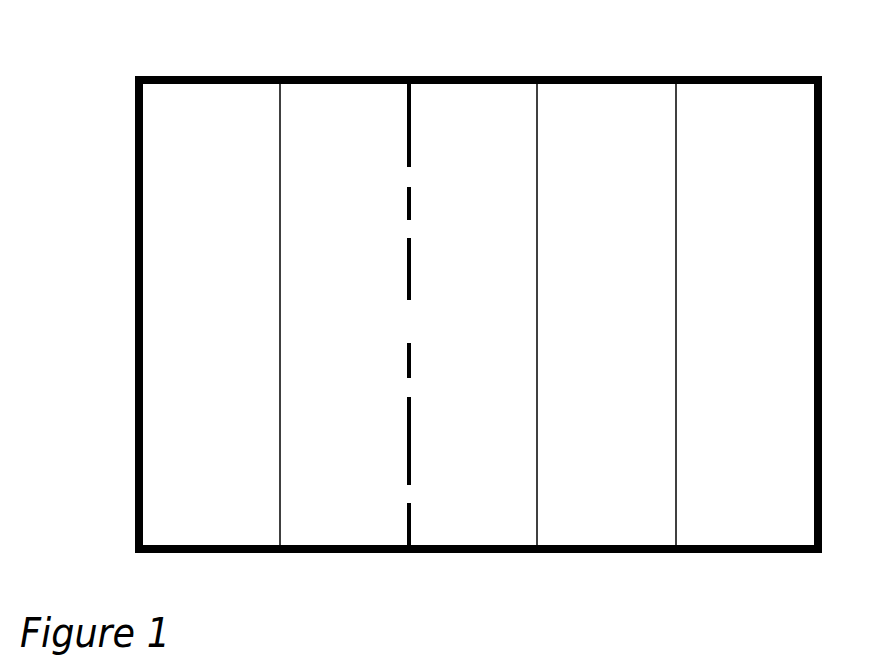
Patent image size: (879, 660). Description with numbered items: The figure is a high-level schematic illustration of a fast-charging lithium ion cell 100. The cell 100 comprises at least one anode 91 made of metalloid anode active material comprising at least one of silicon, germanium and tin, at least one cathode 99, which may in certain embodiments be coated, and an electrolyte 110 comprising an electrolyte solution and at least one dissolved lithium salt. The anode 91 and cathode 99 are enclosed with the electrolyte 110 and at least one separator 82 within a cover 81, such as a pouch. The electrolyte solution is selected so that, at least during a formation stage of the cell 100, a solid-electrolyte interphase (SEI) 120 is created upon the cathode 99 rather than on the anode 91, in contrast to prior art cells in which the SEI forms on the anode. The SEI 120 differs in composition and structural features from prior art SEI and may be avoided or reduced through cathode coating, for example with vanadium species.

The fast-charging lithium ion cell 100 is at (80, 26).
The cover 81 is at (135, 145).
The anode 91 is at (207, 98).
The electrolyte 110 is at (360, 98).
The separator 82 is at (412, 103).
The solid-electrolyte interphase (SEI) 120 is at (613, 100).
The cathode 99 is at (738, 98).